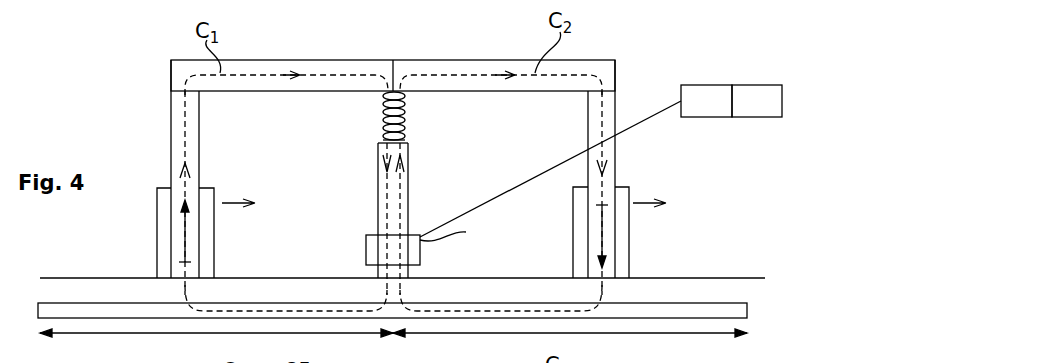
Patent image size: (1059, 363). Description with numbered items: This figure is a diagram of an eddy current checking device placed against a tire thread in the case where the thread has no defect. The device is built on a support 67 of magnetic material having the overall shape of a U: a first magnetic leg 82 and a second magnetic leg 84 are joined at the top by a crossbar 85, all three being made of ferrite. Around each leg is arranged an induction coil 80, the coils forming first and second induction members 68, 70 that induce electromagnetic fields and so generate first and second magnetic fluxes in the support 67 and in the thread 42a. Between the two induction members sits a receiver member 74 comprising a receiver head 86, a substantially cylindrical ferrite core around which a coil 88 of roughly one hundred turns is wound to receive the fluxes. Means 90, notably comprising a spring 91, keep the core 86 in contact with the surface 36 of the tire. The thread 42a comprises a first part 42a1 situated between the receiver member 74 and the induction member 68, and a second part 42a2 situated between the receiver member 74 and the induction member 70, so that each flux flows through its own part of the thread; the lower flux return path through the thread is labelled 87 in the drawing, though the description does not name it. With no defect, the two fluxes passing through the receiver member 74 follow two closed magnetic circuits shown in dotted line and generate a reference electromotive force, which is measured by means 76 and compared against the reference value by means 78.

The surface 36 is at (740, 278).
The thread 42a is at (712, 310).
The first part of the thread 42a1 is at (207, 333).
The second part of the thread 42a2 is at (588, 333).
The support 67 is at (393, 56).
The first induction member 68 is at (160, 177).
The second induction member 70 is at (657, 177).
The receiver member 74 is at (410, 193).
The means for measuring the signal 76 is at (576, 161).
The means for comparing the signal 78 is at (757, 101).
The induction coil 80 is at (163, 248).
The first magnetic leg 82 is at (176, 107).
The second magnetic leg 84 is at (610, 113).
The crossbar 85 is at (322, 66).
The receiver head 86 is at (408, 143).
The lower conduit 87 is at (393, 324).
The coil 88 is at (420, 252).
The means for keeping the core in contact with the surface 90 is at (372, 108).
The spring 91 is at (383, 125).